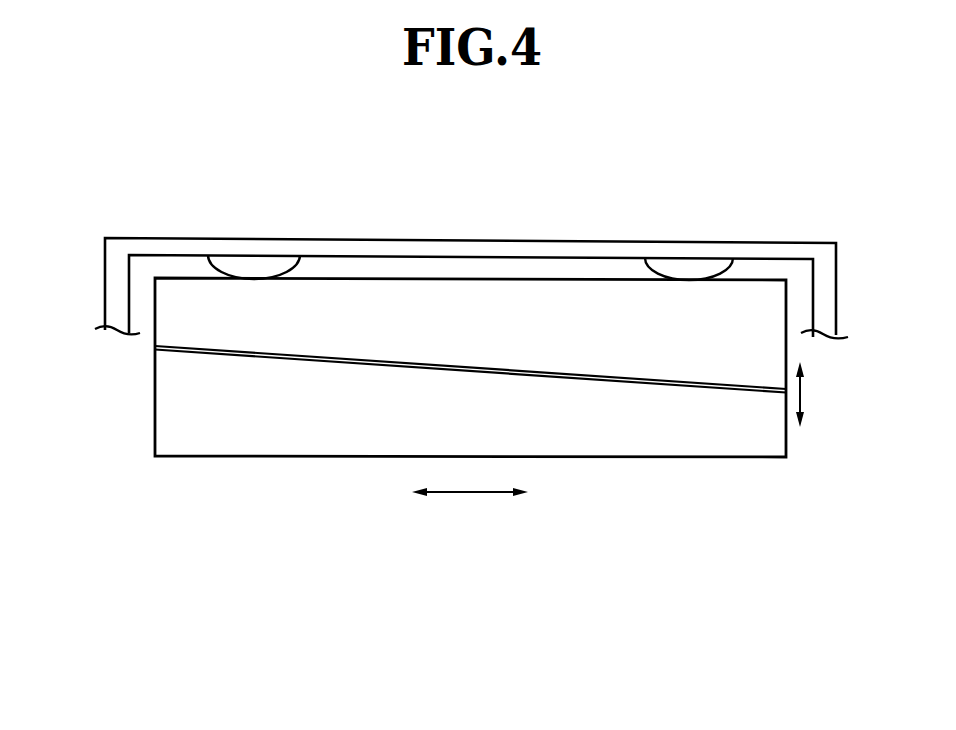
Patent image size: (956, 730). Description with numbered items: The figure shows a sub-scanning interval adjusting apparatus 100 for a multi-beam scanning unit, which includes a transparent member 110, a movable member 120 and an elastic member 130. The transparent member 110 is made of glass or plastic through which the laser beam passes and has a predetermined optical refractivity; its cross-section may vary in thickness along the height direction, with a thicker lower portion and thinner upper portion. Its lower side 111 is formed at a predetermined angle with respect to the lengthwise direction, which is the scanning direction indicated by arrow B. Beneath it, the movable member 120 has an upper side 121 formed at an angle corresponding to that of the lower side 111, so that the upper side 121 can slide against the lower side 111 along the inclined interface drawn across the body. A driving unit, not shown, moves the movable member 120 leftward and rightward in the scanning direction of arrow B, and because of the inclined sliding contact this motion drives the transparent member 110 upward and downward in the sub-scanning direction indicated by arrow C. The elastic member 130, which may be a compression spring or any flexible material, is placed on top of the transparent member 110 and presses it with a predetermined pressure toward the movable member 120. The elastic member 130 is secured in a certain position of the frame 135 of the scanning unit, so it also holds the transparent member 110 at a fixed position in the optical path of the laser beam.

The sub-scanning interval adjusting apparatus 100 is at (148, 92).
The transparent member 110 is at (172, 307).
The lower side 111 is at (320, 356).
The movable member 120 is at (172, 410).
The upper side 121 is at (385, 371).
The elastic member 130 is at (250, 262).
The frame 135 is at (786, 243).
The arrow B is at (470, 492).
The arrow C is at (803, 390).